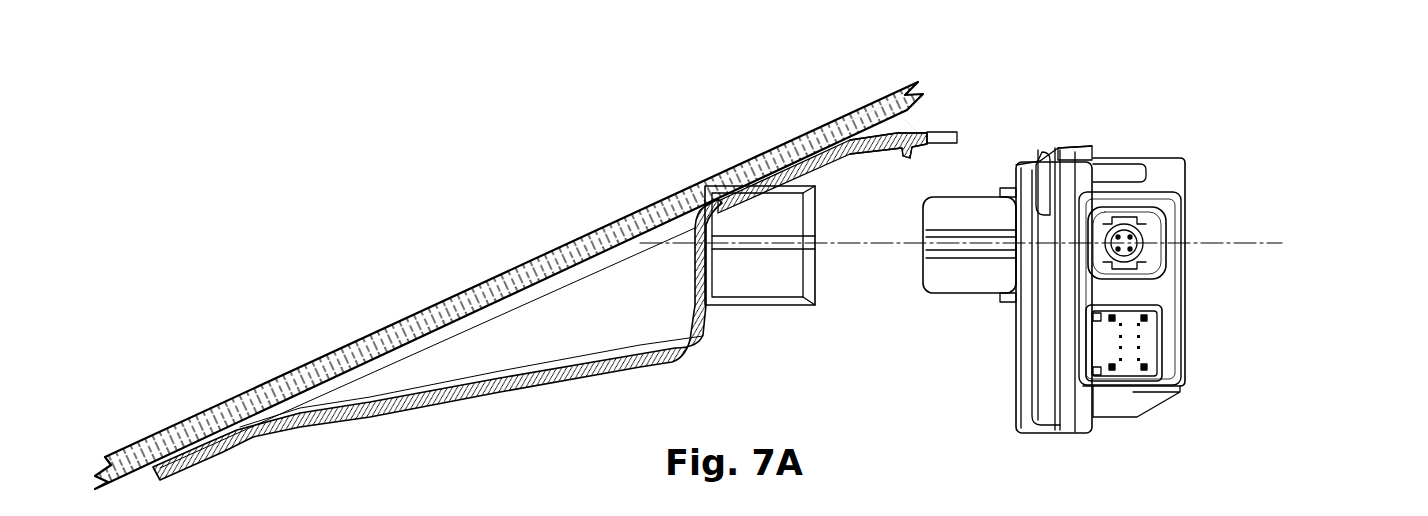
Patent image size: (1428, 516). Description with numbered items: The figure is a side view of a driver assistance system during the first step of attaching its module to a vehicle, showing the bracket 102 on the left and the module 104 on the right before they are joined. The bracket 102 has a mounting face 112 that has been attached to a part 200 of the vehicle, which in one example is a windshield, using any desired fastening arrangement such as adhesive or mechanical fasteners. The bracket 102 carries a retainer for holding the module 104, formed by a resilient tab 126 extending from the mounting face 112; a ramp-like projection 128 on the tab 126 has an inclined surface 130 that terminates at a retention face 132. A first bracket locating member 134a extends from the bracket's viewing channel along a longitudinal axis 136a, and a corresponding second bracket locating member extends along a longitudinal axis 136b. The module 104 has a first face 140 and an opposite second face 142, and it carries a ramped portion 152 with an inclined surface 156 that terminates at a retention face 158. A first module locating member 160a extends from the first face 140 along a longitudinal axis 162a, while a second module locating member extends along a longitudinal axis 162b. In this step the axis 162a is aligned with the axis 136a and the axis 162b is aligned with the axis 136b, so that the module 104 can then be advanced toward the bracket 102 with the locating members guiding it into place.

The bracket 102 is at (433, 420).
The module 104 is at (1165, 238).
The mounting face 112 is at (787, 150).
The resilient tab 126 is at (875, 118).
The projection 128 is at (922, 126).
The inclined surface 130 is at (921, 153).
The retention face 132 is at (901, 159).
The first bracket locating member 134a is at (768, 207).
The longitudinal axis of first bracket locating member 136a is at (1232, 243).
The longitudinal axis of second bracket locating member 136b is at (1247, 339).
The first face 140 is at (1000, 377).
The second face 142 is at (1200, 353).
The ramped portion 152 is at (1065, 165).
The inclined surface 156 is at (1041, 142).
The retention face 158 is at (1090, 147).
The first module locating member 160a is at (970, 208).
The longitudinal axis of first module locating member 162a is at (1223, 287).
The longitudinal axis of second module locating member 162b is at (1246, 344).
The vehicle part 200 is at (848, 114).